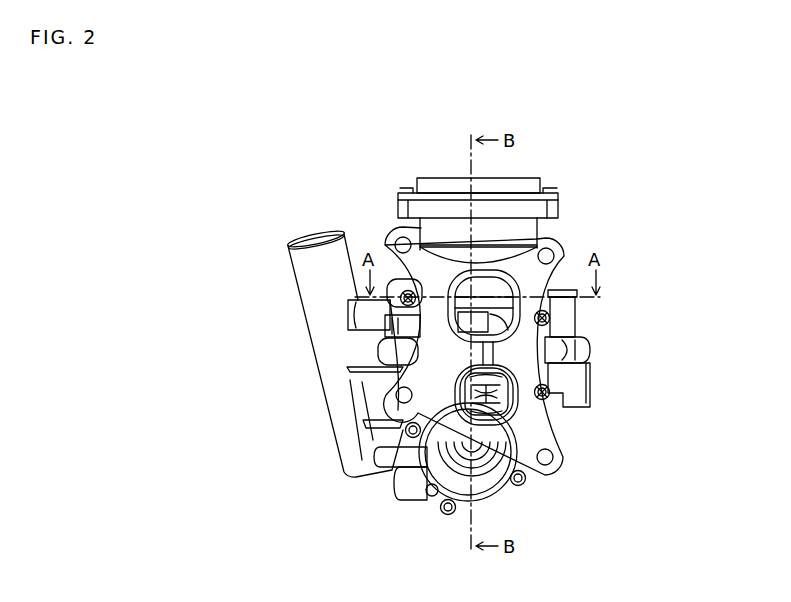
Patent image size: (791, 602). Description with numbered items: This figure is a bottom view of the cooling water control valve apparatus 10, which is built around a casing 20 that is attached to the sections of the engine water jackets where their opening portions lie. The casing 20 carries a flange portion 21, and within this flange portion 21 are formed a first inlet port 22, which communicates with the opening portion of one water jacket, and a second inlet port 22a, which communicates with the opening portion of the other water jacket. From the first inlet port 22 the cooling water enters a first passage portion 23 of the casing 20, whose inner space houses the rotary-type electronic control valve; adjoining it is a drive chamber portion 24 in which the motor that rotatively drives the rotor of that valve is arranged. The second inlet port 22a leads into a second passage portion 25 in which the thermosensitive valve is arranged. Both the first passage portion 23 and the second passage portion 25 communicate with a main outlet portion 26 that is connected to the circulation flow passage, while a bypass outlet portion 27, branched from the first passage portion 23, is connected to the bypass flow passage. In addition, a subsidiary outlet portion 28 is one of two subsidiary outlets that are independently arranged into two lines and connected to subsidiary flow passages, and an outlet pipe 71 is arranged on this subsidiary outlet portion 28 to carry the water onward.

The cooling water control valve apparatus 10 is at (618, 391).
The casing 20 is at (470, 256).
The flange portion 21 is at (422, 414).
The first inlet port 22 is at (553, 339).
The second inlet port 22a is at (508, 412).
The first passage portion 23 is at (551, 318).
The drive chamber portion 24 is at (524, 233).
The second passage portion 25 is at (440, 497).
The main outlet portion 26 is at (308, 290).
The bypass outlet portion 27 is at (388, 325).
The subsidiary outlet portion 28 is at (559, 370).
The outlet pipe 71 is at (570, 312).